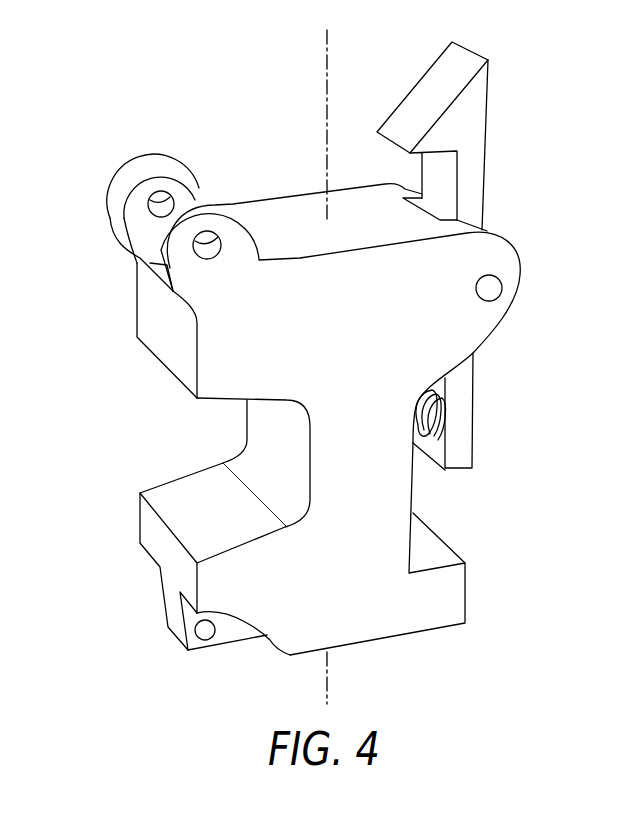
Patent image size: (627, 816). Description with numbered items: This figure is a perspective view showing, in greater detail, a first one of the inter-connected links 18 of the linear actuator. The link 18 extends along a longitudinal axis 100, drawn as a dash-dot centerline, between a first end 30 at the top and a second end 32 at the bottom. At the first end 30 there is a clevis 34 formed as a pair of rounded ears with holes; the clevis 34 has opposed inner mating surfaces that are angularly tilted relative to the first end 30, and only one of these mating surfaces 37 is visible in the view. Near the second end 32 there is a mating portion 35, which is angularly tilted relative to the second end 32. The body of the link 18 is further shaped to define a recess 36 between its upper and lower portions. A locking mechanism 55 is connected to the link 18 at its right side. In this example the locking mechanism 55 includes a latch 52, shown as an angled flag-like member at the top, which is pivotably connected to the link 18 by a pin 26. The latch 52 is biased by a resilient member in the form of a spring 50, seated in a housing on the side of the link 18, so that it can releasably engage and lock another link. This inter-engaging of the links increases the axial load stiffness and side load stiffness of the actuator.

The link 18 is at (183, 77).
The longitudinal axis 100 is at (327, 76).
The first end 30 is at (283, 213).
The latch 52 is at (470, 120).
The locking mechanism 55 is at (487, 172).
The clevis 34 is at (127, 155).
The mating surface 37 is at (137, 217).
The pin 26 is at (489, 288).
The recess 36 is at (152, 417).
The spring 50 is at (428, 418).
The mating portion 35 is at (227, 630).
The second end 32 is at (415, 637).